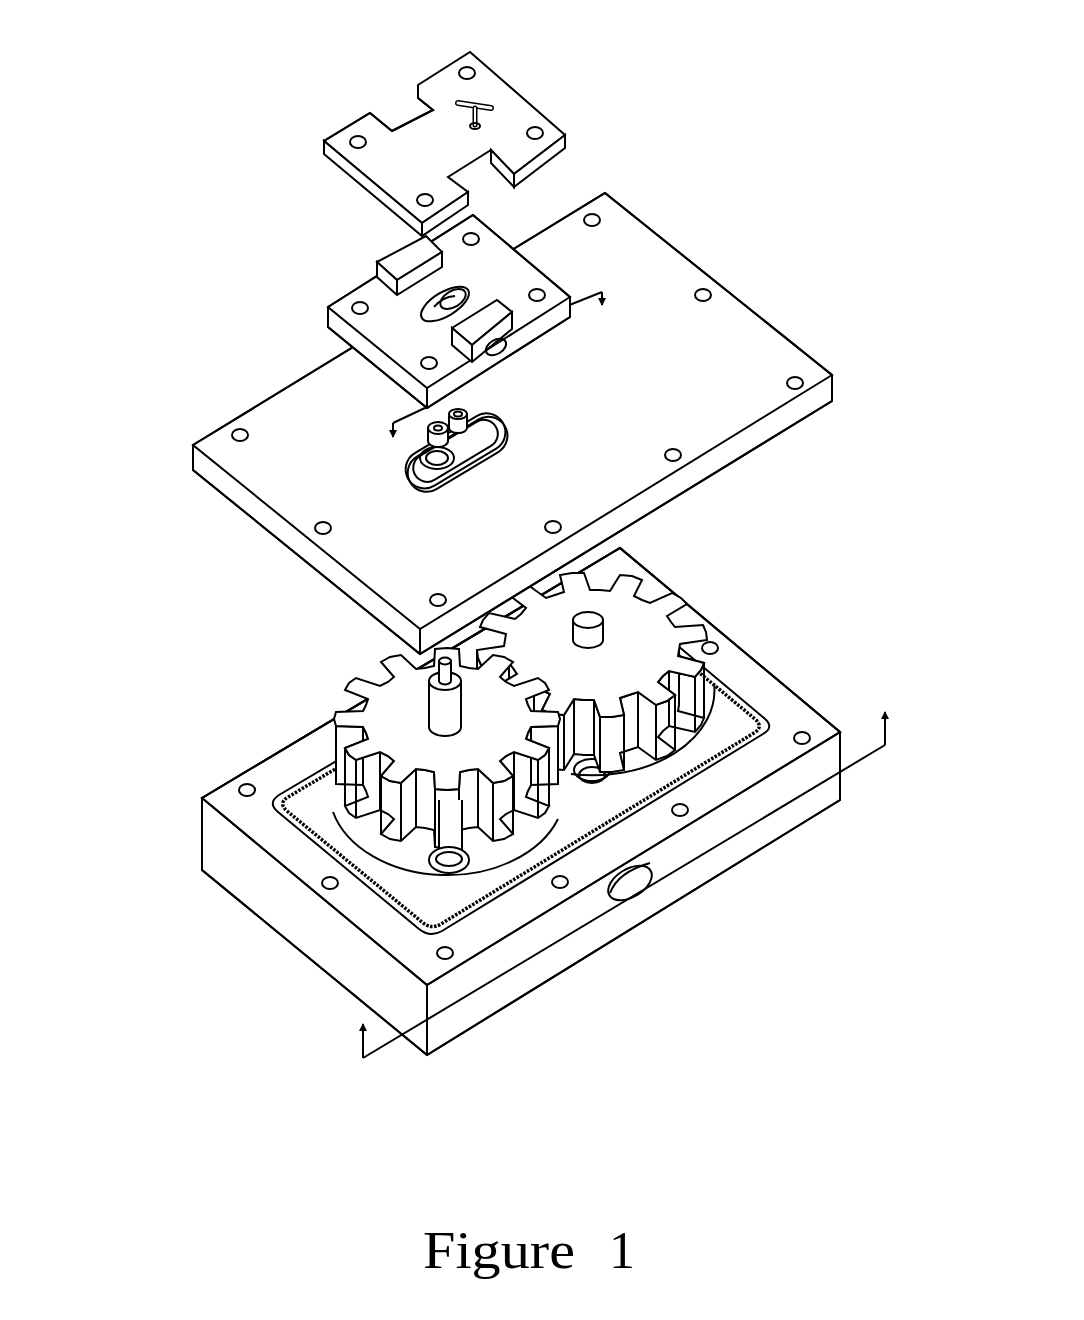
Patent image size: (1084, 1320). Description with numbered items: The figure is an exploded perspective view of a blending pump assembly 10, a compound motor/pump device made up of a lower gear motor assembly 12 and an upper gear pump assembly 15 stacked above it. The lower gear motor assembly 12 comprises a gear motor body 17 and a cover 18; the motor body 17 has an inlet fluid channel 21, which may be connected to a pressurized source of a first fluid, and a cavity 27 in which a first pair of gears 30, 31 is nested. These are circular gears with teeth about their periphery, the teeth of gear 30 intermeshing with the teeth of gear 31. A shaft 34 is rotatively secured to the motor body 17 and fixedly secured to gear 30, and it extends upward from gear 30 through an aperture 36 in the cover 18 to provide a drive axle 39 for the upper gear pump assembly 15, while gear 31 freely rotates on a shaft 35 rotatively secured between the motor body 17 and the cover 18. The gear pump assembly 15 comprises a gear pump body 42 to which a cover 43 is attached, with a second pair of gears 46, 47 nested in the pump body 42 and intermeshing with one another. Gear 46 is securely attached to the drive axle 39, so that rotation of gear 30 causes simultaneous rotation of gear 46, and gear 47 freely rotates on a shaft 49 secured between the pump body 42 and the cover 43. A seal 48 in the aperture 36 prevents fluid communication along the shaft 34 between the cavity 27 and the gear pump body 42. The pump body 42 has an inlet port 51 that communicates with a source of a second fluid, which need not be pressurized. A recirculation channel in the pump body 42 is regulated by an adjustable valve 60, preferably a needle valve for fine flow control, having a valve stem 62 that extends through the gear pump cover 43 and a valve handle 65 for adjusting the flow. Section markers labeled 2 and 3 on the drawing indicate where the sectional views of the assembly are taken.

The blending pump assembly 10 is at (180, 889).
The lower gear motor assembly 12 is at (532, 1008).
The upper gear pump assembly 15 is at (606, 276).
The gear motor body 17 is at (742, 650).
The cover 18 is at (770, 323).
The inlet fluid channel 21 is at (630, 900).
The cavity 27 is at (667, 757).
The gear 30 is at (520, 828).
The gear 31 is at (606, 781).
The shaft 34 is at (438, 708).
The shaft 35 is at (592, 618).
The aperture 36 is at (470, 467).
The drive axle 39 is at (437, 666).
The gear pump body 42 is at (348, 293).
The cover 43 is at (515, 83).
The gear 46 is at (410, 467).
The gear 47 is at (500, 430).
The seal 48 is at (482, 457).
The shaft 49 is at (460, 415).
The inlet port 51 is at (500, 352).
The adjustable valve 60 is at (500, 114).
The valve stem 62 is at (393, 129).
The valve handle 65 is at (447, 82).
The section line 2- 2 is at (623, 866).
The section line 3- 3 is at (501, 382).